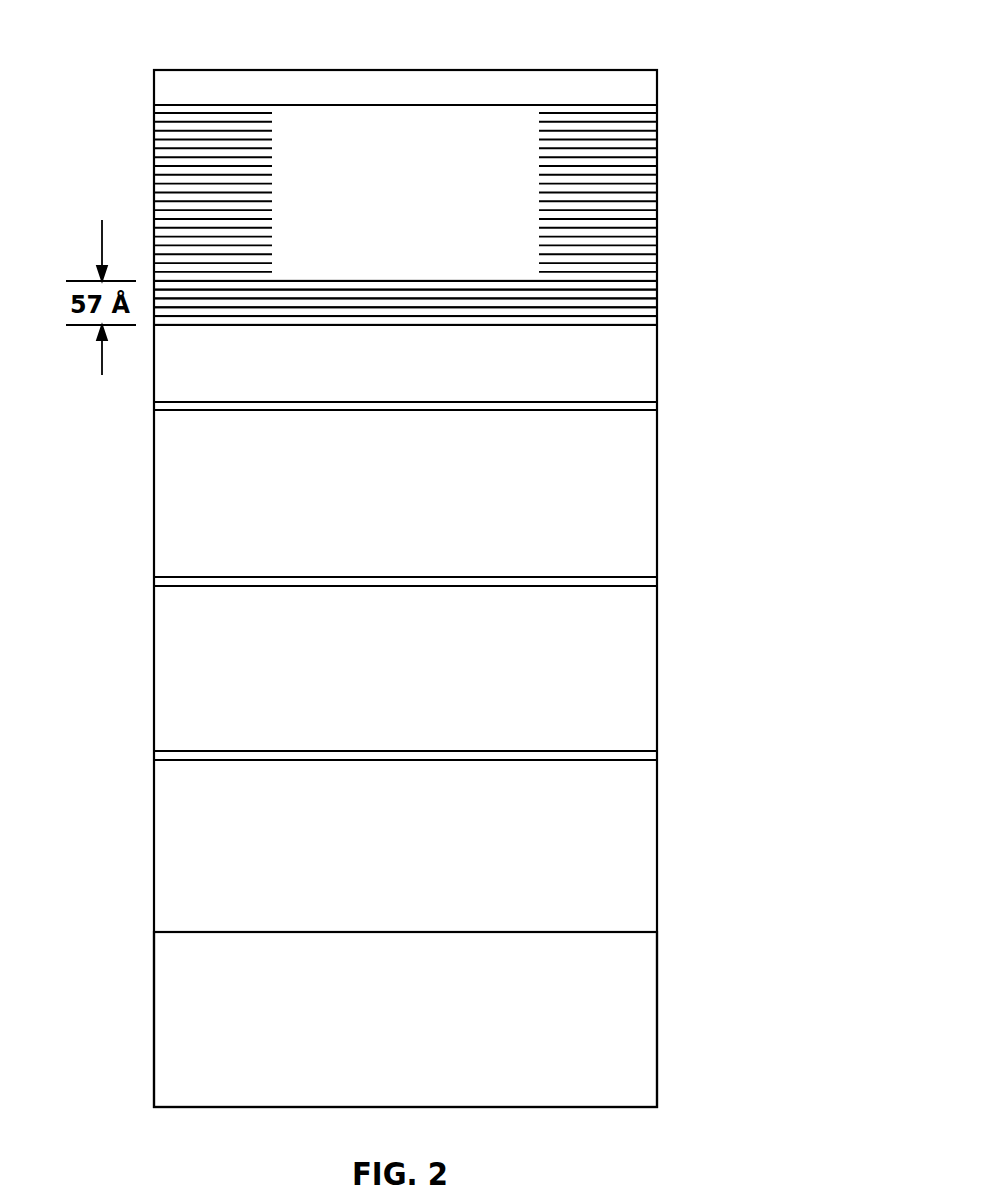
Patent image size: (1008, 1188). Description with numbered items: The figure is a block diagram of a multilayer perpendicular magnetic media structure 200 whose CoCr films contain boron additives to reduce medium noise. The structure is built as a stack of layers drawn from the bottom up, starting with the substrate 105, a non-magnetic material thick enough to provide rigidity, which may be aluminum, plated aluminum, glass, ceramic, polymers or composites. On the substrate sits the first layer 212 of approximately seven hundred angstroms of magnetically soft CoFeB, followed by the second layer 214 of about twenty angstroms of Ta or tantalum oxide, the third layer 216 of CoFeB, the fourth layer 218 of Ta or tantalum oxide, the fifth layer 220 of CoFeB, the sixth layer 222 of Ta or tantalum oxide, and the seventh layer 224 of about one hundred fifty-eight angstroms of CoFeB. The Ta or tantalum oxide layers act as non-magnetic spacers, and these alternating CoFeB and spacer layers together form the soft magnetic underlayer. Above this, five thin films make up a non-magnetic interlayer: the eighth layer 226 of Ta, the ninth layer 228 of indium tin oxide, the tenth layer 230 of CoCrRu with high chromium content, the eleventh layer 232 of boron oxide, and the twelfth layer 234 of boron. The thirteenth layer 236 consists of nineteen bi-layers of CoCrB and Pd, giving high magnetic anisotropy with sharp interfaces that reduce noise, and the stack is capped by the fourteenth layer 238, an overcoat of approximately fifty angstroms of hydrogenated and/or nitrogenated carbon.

The multilayer perpendicular magnetic media structure 200 is at (73, 55).
The fourteenth layer 238 is at (657, 88).
The thirteenth layer 236 is at (657, 168).
The twelfth layer 234 is at (657, 287).
The eleventh layer 232 is at (657, 293).
The tenth layer 230 is at (657, 302).
The ninth layer 228 is at (657, 312).
The eighth layer 226 is at (657, 320).
The seventh layer 224 is at (657, 360).
The sixth layer 222 is at (657, 405).
The fifth layer 220 is at (657, 503).
The fourth layer 218 is at (657, 577).
The third layer 216 is at (657, 665).
The second layer 214 is at (657, 752).
The first layer 212 is at (657, 850).
The substrate 105 is at (657, 1025).